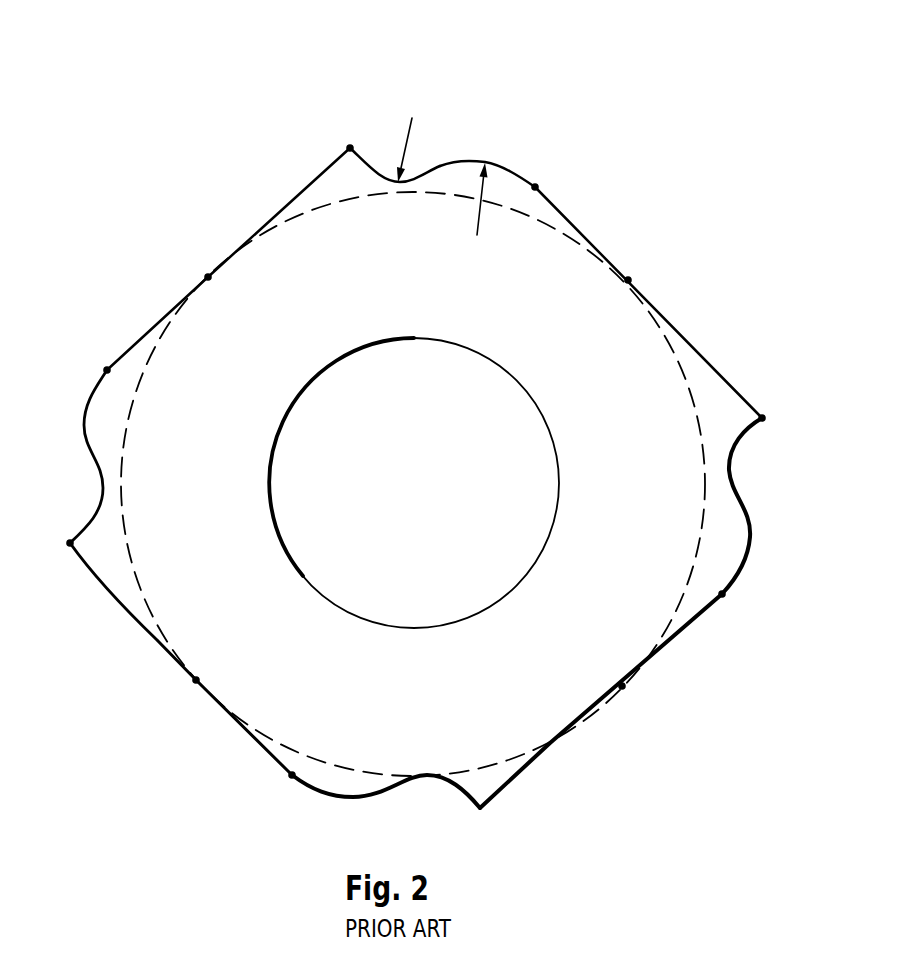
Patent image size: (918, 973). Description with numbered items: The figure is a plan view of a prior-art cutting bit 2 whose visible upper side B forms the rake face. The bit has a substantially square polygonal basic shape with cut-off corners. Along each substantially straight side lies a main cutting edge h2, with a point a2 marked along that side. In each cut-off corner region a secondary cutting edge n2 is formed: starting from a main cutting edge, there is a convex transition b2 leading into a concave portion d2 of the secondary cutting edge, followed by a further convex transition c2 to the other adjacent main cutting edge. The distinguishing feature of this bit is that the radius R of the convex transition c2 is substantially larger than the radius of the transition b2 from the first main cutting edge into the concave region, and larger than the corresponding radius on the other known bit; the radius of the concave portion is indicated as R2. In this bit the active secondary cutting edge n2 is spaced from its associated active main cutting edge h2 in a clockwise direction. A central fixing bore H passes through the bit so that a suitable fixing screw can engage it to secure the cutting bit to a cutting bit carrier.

The cutting bit 2 is at (416, 437).
The point a2 is at (208, 277).
The convex transition b2 is at (350, 148).
The convex transition c2 is at (107, 370).
The concave portion d2 is at (428, 172).
The secondary cutting edge n2 is at (488, 162).
The main cutting edge h2 is at (272, 218).
The recess radius R2 is at (412, 118).
The radius R is at (478, 222).
The upper side B is at (207, 475).
The central fixing bore H is at (553, 467).